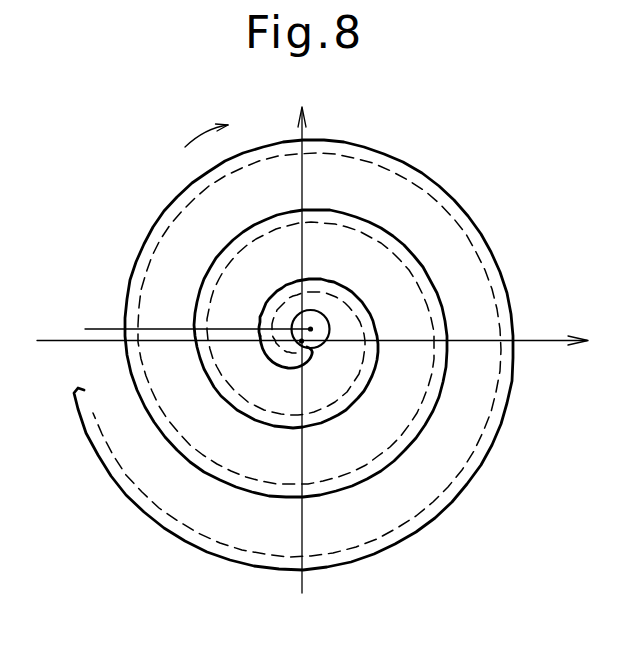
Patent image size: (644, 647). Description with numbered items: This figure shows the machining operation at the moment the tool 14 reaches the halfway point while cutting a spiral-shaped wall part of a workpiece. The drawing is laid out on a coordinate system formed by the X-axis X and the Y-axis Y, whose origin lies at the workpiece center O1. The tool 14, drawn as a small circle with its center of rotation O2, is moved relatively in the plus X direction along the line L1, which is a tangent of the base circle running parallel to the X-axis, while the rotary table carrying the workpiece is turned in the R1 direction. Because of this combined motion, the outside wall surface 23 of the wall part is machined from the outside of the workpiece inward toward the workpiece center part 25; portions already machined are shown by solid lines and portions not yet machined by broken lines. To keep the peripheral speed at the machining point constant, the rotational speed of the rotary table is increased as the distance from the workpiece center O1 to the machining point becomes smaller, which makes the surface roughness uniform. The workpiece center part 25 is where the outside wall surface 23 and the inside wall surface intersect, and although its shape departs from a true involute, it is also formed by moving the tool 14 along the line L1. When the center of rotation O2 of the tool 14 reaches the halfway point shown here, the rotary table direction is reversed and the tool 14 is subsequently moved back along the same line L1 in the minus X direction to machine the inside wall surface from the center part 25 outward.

The outside wall surface 23 is at (152, 220).
The tool 14 is at (329, 325).
The workpiece center part 25 is at (313, 358).
The tangent of the base circle L1 is at (95, 329).
The R1 direction R1 is at (204, 126).
The workpiece center O1 is at (301, 342).
The center of rotation of the tool O2 is at (312, 328).
The X-axis X is at (324, 342).
The Y-axis Y is at (299, 338).